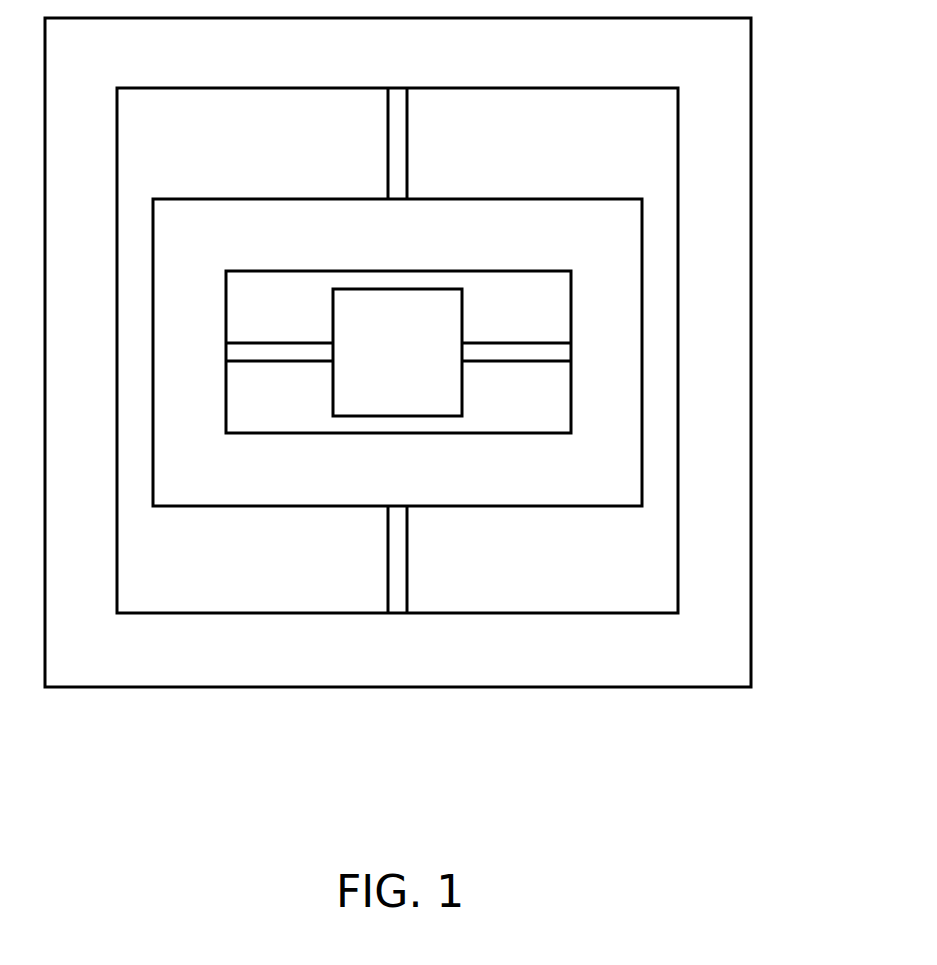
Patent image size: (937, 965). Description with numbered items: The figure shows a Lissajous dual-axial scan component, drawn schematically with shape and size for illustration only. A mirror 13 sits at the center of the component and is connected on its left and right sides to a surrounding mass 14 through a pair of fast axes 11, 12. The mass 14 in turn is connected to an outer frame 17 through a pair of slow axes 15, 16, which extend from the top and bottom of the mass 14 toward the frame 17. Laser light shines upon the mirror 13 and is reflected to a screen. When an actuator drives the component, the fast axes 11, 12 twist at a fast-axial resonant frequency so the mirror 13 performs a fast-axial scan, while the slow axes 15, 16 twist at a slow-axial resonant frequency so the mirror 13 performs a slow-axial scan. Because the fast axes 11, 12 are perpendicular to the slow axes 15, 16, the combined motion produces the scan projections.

The fast axis 11 is at (278, 342).
The fast axis 12 is at (515, 342).
The mirror 13 is at (398, 416).
The mass 14 is at (242, 199).
The slow axis 15 is at (408, 143).
The slow axis 16 is at (408, 558).
The frame 17 is at (751, 353).